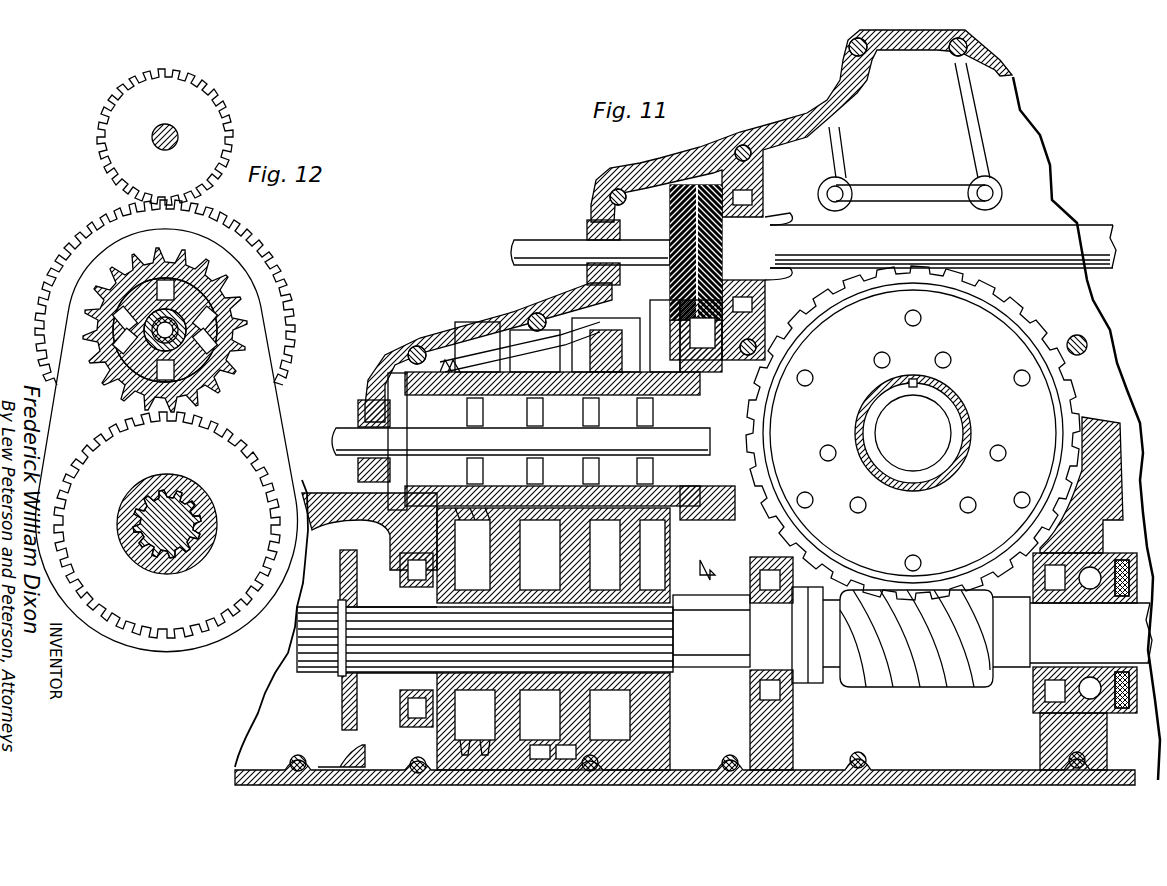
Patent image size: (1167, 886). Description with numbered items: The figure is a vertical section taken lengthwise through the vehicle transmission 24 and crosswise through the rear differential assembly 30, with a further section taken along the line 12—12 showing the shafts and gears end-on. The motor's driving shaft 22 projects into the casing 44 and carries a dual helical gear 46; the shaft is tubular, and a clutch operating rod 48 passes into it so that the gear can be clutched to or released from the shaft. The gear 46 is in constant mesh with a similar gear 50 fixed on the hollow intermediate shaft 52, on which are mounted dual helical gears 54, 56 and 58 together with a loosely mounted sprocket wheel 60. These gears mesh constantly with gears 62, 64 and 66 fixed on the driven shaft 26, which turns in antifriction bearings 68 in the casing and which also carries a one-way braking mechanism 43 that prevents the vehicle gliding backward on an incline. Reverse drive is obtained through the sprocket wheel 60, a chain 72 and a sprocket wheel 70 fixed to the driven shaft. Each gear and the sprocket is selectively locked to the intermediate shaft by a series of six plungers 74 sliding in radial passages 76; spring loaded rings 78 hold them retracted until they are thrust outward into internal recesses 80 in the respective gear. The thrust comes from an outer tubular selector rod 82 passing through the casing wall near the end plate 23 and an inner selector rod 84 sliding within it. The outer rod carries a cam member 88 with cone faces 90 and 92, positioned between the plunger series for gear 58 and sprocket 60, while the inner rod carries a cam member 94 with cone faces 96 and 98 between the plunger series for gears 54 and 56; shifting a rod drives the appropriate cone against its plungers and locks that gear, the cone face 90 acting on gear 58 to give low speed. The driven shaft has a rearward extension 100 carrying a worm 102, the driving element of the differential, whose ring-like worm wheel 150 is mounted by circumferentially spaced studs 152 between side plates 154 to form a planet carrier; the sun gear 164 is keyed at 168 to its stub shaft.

In FIG. 11, the section line 12— 12 is at (643, 200).
In FIG. 12, the driving shaft 22 is at (205, 505).
In FIG. 11, the driving shaft 22 is at (1100, 222).
In FIG. 11, the end plate 23 is at (375, 392).
In FIG. 11, the transmission 24 is at (478, 297).
In FIG. 11, the driven shaft 26 is at (305, 665).
In FIG. 11, the rear differential assembly 30 is at (1062, 325).
In FIG. 11, the one-way braking mechanism 43 is at (322, 714).
In FIG. 11, the casing 44 is at (440, 340).
In FIG. 12, the gear 46 is at (215, 110).
In FIG. 11, the gear 46 is at (700, 193).
In FIG. 11, the clutch operating rod 48 is at (537, 250).
In FIG. 12, the gear 50 is at (277, 285).
In FIG. 11, the gear 50 is at (761, 621).
In FIG. 12, the intermediate shaft 52 is at (195, 392).
In FIG. 11, the intermediate shaft 52 is at (745, 458).
In FIG. 11, the dual helical gear 54 is at (648, 300).
In FIG. 11, the dual helical gear 56 is at (590, 330).
In FIG. 11, the dual helical gear 58 is at (532, 356).
In FIG. 12, the sprocket wheel 60 is at (120, 412).
In FIG. 11, the sprocket wheel 60 is at (470, 366).
In FIG. 11, the gear 62 is at (645, 700).
In FIG. 11, the gear 64 is at (600, 735).
In FIG. 11, the gear 66 is at (545, 760).
In FIG. 11, the antifriction bearings 68 is at (418, 715).
In FIG. 12, the sprocket wheel 70 is at (113, 411).
In FIG. 11, the sprocket wheel 70 is at (478, 758).
In FIG. 12, the chain 72 is at (272, 418).
In FIG. 12, the plungers 74 is at (182, 290).
In FIG. 11, the plungers 74 is at (578, 412).
In FIG. 12, the radially extending passages 76 is at (163, 282).
In FIG. 11, the radially extending passages 76 is at (660, 398).
In FIG. 11, the spring loaded rings 78 is at (470, 425).
In FIG. 12, the internal recesses 80 is at (205, 292).
In FIG. 12, the outer tubular selector rod 82 is at (181, 335).
In FIG. 11, the outer tubular selector rod 82 is at (360, 400).
In FIG. 12, the inner selector rod 84 is at (148, 318).
In FIG. 11, the inner selector rod 84 is at (330, 441).
In FIG. 12, the cam member 88 is at (165, 359).
In FIG. 11, the cam member 88 is at (512, 427).
In FIG. 11, the cone face 90 is at (548, 418).
In FIG. 11, the cone face 92 is at (520, 404).
In FIG. 11, the cam member 94 is at (622, 430).
In FIG. 11, the cone face 96 is at (650, 435).
In FIG. 11, the cone face 98 is at (573, 459).
In FIG. 11, the rearward extension 100 is at (725, 675).
In FIG. 11, the worm 102 is at (920, 685).
In FIG. 11, the worm wheel 150 is at (1060, 375).
In FIG. 11, the studs 152 is at (813, 378).
In FIG. 11, the side plates 154 is at (1045, 400).
In FIG. 11, the sun gear 164 is at (912, 495).
In FIG. 11, the key 168 is at (914, 388).